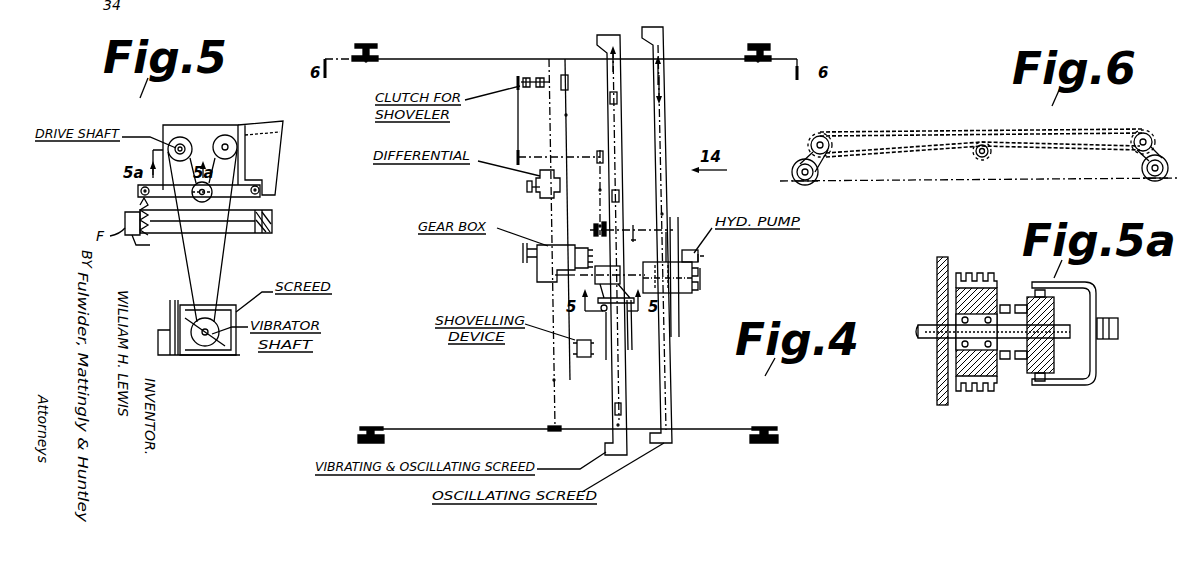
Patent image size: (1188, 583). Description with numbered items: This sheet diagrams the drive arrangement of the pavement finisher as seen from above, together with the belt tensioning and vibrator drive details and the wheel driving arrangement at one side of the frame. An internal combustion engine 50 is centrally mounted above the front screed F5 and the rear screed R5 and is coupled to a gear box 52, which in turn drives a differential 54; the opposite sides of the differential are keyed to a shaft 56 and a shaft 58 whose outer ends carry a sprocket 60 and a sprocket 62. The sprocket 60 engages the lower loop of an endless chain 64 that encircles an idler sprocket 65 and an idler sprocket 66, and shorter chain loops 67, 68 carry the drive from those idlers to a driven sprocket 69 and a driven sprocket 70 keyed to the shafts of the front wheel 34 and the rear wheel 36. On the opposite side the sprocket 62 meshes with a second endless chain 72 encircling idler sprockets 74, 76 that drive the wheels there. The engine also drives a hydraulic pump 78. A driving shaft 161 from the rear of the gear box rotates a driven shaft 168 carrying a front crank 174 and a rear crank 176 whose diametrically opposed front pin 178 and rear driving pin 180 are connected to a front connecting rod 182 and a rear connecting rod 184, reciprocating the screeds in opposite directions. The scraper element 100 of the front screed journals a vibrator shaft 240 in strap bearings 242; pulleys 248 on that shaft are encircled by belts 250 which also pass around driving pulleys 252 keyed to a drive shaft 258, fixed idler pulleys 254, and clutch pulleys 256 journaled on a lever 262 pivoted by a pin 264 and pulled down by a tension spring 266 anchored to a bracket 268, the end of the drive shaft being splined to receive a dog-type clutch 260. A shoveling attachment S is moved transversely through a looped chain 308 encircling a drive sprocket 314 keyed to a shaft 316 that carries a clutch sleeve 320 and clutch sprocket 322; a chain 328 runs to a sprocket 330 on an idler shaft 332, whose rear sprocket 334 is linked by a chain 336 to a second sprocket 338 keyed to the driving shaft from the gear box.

In FIG. 4, the front wheel 34 is at (382, 44).
In FIG. 6, the front wheel 34 is at (1152, 181).
In FIG. 4, the rear wheel 36 is at (772, 44).
In FIG. 6, the rear wheel 36 is at (805, 186).
In FIG. 4, the internal combustion engine 50 is at (694, 294).
In FIG. 4, the gear box 52 is at (540, 266).
In FIG. 4, the differential 54 is at (528, 192).
In FIG. 4, the shaft 56 is at (574, 50).
In FIG. 4, the shaft 58 is at (549, 382).
In FIG. 4, the sprocket 60 is at (549, 58).
In FIG. 6, the sprocket 60 is at (986, 158).
In FIG. 4, the sprocket 62 is at (554, 432).
In FIG. 4, the endless chain 64 is at (463, 55).
In FIG. 6, the endless chain 64 is at (922, 133).
In FIG. 6, the idler sprocket 65 is at (1145, 132).
In FIG. 4, the idler sprocket 66 is at (352, 62).
In FIG. 6, the idler sprocket 66 is at (825, 135).
In FIG. 6, the chain loop 67 is at (1135, 150).
In FIG. 4, the chain loop 68 is at (760, 63).
In FIG. 6, the chain loop 68 is at (834, 156).
In FIG. 6, the driven sprocket 69 is at (1146, 179).
In FIG. 6, the driven sprocket 70 is at (815, 181).
In FIG. 4, the second endless chain 72 is at (445, 427).
In FIG. 4, the idler sprocket 74 is at (390, 426).
In FIG. 4, the idler sprocket 76 is at (780, 425).
In FIG. 4, the hydraulic pump 78 is at (702, 258).
In FIG. 4, the scraper element 100 is at (621, 146).
In FIG. 4, the driving shaft 161 is at (566, 280).
In FIG. 4, the driven shaft 168 is at (663, 213).
In FIG. 4, the front crank 174 is at (636, 232).
In FIG. 4, the rear crank 176 is at (654, 232).
In FIG. 4, the front pin 178 is at (590, 228).
In FIG. 4, the rear driving pin 180 is at (690, 250).
In FIG. 4, the front connecting rod 182 is at (631, 340).
In FIG. 4, the rear connecting rod 184 is at (680, 310).
In FIG. 5, the shaft 240 is at (208, 340).
In FIG. 5, the strap bearings 242 is at (198, 352).
In FIG. 5, the pulleys 248 is at (222, 325).
In FIG. 5, the belts 250 is at (231, 246).
In FIG. 5, the driving pulleys 252 is at (222, 135).
In FIG. 5A, the driving pulleys 252 is at (1000, 385).
In FIG. 5, the fixed idler pulleys 254 is at (243, 125).
In FIG. 5, the clutch pulleys 256 is at (205, 203).
In FIG. 5, the drive shaft 258 is at (173, 143).
In FIG. 5A, the drive shaft 258 is at (930, 325).
In FIG. 5, the dog-type clutch 260 is at (165, 175).
In FIG. 4, the dog-type clutch 260 is at (606, 305).
In FIG. 5A, the dog-type clutch 260 is at (1060, 306).
In FIG. 5, the lever 262 is at (258, 210).
In FIG. 5, the pin 264 is at (262, 192).
In FIG. 5, the tension spring 266 is at (125, 220).
In FIG. 5, the bracket 268 is at (148, 242).
In FIG. 4, the looped chain 308 is at (569, 116).
In FIG. 4, the drive sprocket 314 is at (570, 82).
In FIG. 4, the shaft 316 is at (516, 80).
In FIG. 4, the clutch sleeve 320 is at (538, 90).
In FIG. 4, the clutch sprocket 322 is at (522, 90).
In FIG. 4, the chain 328 is at (518, 125).
In FIG. 4, the sprocket 330 is at (516, 155).
In FIG. 4, the idler shaft 332 is at (586, 157).
In FIG. 4, the sprocket 334 is at (600, 163).
In FIG. 4, the chain 336 is at (600, 190).
In FIG. 4, the second sprocket 338 is at (606, 232).
In FIG. 4, the front screed F5 is at (608, 426).
In FIG. 4, the rear screed R5 is at (670, 416).
In FIG. 4, the shoveling attachment S is at (575, 350).